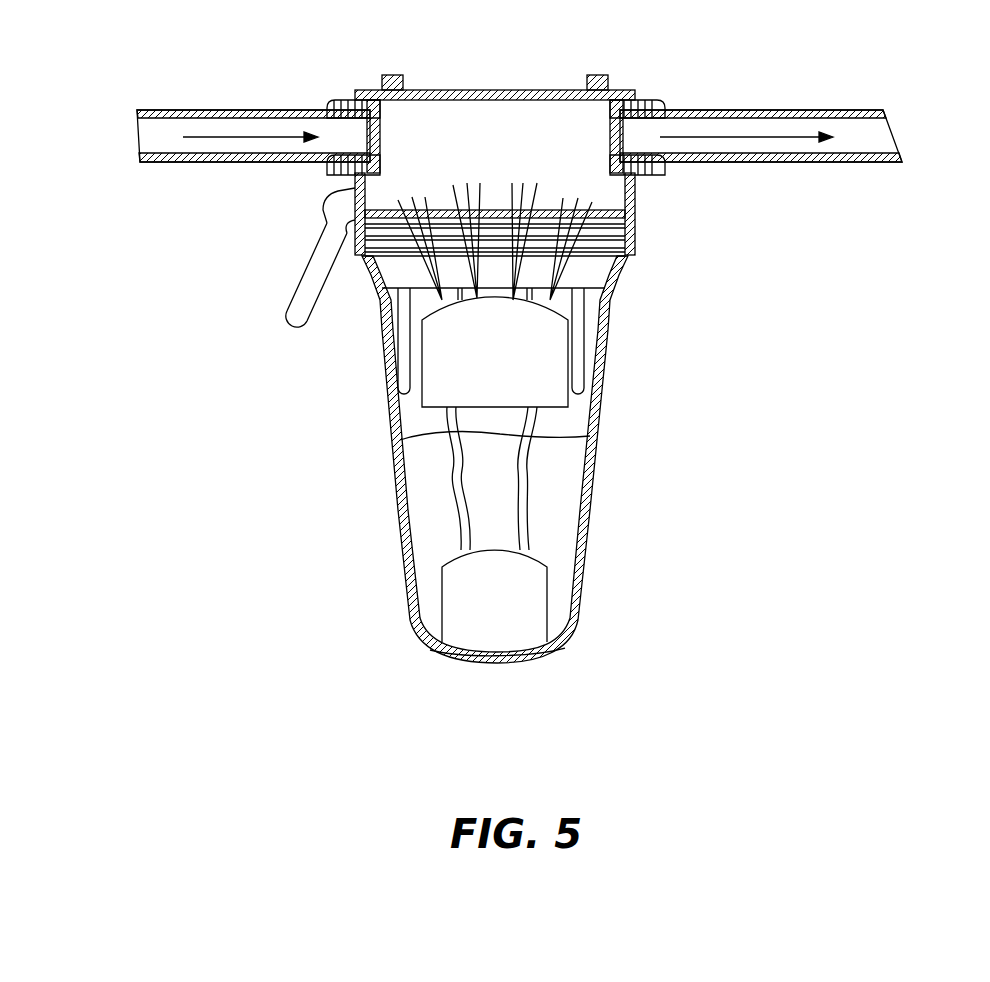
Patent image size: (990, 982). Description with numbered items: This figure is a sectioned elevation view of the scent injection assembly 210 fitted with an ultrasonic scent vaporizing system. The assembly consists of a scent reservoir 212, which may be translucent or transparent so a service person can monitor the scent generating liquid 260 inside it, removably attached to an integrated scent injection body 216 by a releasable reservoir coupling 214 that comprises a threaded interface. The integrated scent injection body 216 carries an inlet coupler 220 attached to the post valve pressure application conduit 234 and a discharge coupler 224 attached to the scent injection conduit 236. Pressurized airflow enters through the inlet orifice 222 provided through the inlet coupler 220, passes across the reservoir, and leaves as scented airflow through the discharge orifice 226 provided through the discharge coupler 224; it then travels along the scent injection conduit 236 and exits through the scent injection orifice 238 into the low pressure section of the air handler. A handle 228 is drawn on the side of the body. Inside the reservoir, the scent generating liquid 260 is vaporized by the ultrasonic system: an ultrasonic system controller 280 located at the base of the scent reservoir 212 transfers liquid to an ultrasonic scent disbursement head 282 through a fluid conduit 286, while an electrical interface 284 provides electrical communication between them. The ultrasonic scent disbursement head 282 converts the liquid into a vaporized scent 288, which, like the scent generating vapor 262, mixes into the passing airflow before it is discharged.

The scent injection assembly 210 is at (298, 640).
The scent reservoir 212 is at (401, 537).
The releasable reservoir coupling 214 is at (632, 242).
The integrated scent injection body 216 is at (637, 196).
The inlet coupler 220 is at (350, 100).
The inlet orifice 222 is at (386, 137).
The discharge coupler 224 is at (650, 100).
The discharge orifice 226 is at (606, 137).
The handle 228 is at (300, 273).
The post valve pressure application conduit 234 is at (248, 110).
The scent injection conduit 236 is at (753, 110).
The scent injection orifice 238 is at (908, 132).
The scent generating liquid 260 is at (555, 558).
The scent generating vapor 262 is at (593, 345).
The ultrasonic system controller 280 is at (532, 618).
The ultrasonic scent disbursement head 282 is at (418, 368).
The electrical interface 284 is at (450, 477).
The fluid conduit 286 is at (530, 452).
The vaporized scent 288 is at (563, 267).